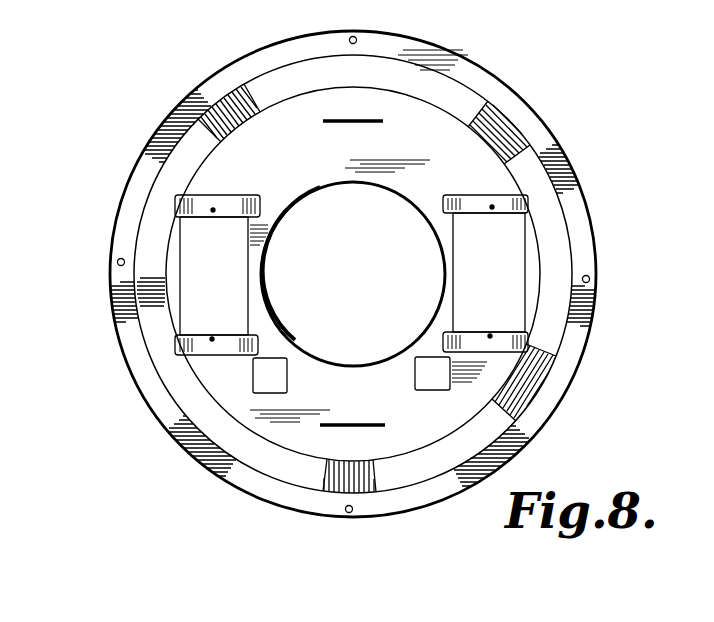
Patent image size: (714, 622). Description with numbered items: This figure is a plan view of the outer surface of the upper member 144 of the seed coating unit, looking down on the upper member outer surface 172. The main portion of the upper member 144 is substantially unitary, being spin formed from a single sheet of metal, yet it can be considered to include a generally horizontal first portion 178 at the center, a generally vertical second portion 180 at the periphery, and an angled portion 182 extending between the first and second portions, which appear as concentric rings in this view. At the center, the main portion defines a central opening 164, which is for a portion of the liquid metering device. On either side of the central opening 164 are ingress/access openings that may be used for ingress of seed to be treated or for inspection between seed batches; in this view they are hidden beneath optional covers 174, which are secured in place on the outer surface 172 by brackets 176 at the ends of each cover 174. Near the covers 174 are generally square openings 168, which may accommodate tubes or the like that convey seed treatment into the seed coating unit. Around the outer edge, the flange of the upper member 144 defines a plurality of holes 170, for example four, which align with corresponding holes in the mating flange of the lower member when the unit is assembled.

The upper member 144 is at (127, 198).
The central opening 164 is at (395, 182).
The generally square openings 168 is at (267, 393).
The holes 170 is at (354, 37).
The upper member outer surface 172 is at (318, 161).
The covers 174 is at (180, 292).
The brackets 176 is at (178, 196).
The first portion 178 is at (472, 122).
The second portion 180 is at (560, 137).
The angled portion 182 is at (538, 117).